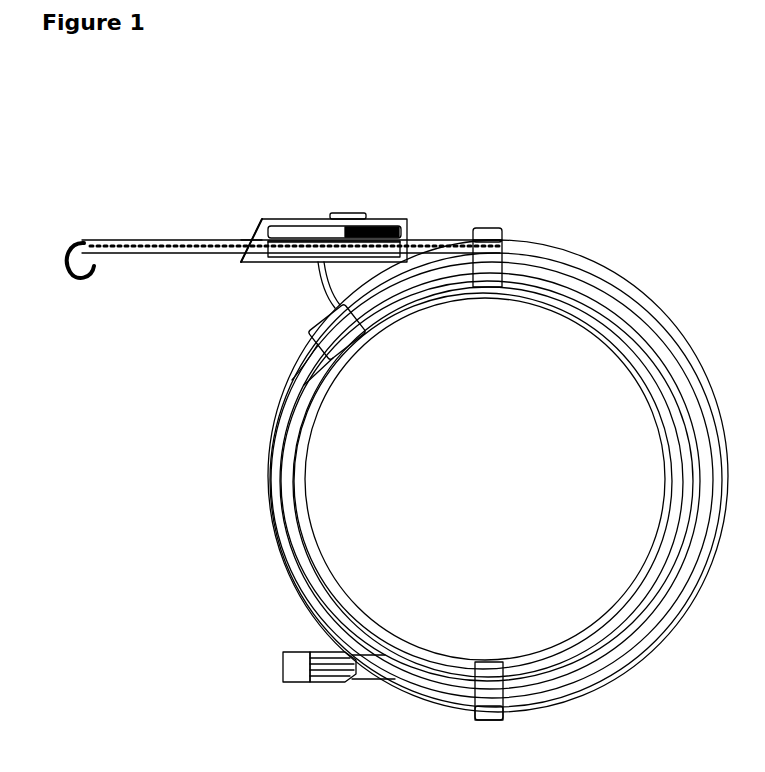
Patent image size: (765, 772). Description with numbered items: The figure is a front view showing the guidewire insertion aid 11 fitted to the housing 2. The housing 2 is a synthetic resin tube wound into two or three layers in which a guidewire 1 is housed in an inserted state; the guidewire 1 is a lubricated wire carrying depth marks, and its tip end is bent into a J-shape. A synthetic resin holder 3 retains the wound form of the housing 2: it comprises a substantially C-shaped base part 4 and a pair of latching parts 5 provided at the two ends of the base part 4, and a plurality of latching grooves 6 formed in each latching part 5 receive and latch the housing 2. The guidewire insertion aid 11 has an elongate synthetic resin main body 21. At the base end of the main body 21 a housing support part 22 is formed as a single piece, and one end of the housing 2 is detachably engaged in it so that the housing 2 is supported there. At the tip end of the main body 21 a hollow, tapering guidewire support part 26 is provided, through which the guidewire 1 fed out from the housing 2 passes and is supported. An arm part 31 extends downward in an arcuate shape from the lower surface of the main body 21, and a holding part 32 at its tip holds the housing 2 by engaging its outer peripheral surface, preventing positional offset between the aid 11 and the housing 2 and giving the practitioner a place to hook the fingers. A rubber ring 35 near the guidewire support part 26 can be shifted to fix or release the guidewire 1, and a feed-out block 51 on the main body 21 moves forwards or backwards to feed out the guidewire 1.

The guidewire 1 is at (76, 258).
The housing 2 is at (588, 683).
The holder 3 is at (598, 612).
The base part 4 is at (667, 466).
The latching parts 5 is at (490, 292).
The latching grooves 6 is at (487, 233).
The guidewire insertion aid 11 is at (258, 160).
The main body 21 is at (262, 265).
The housing support part 22 is at (412, 244).
The guidewire support part 26 is at (138, 258).
The arm part 31 is at (345, 290).
The holding part 32 is at (336, 362).
The rubber ring 35 is at (250, 238).
The feed-out block 51 is at (342, 213).